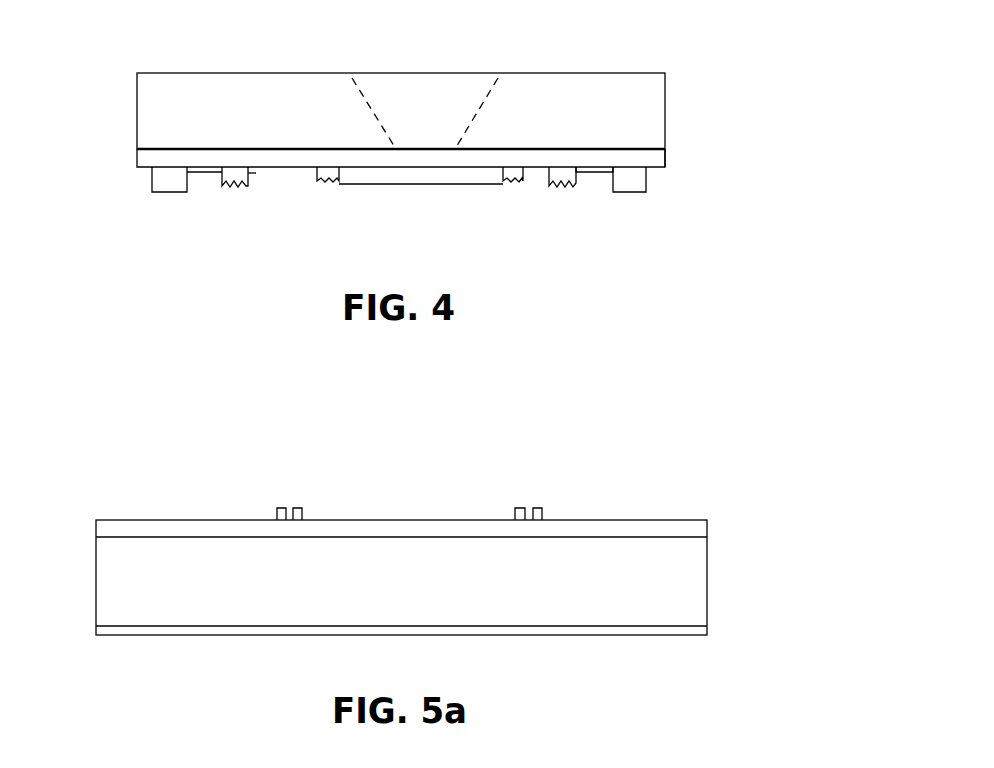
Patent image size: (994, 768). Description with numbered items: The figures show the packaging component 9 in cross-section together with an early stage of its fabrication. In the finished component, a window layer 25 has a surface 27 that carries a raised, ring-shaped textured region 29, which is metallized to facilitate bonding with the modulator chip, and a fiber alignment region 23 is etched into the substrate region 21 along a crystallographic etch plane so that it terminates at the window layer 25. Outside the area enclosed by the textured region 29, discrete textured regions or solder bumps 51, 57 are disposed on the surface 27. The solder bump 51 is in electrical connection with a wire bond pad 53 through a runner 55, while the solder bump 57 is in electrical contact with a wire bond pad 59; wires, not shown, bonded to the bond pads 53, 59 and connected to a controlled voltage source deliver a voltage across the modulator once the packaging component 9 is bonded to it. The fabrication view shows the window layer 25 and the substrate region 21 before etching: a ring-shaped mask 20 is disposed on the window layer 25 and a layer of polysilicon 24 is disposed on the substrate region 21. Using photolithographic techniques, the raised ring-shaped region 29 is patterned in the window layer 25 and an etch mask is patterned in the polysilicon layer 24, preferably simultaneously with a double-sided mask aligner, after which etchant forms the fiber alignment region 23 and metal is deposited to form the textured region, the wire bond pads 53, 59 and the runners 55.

In FIG. 4, the packaging component 9 is at (683, 106).
In FIG. 4, the fiber alignment region 23 is at (423, 84).
In FIG. 4, the polysilicon layer 24 is at (418, 174).
In FIG. 5a, the polysilicon layer 24 is at (98, 632).
In FIG. 4, the window layer 25 is at (142, 161).
In FIG. 5a, the window layer 25 is at (698, 527).
In FIG. 4, the surface 27 is at (653, 167).
In FIG. 4, the textured region 29 is at (330, 177).
In FIG. 4, the solder bump 51 is at (250, 174).
In FIG. 4, the wire bond pad 53 is at (163, 182).
In FIG. 4, the runner 55 is at (198, 173).
In FIG. 4, the solder bump 57 is at (562, 180).
In FIG. 4, the wire bond pad 59 is at (630, 183).
In FIG. 5a, the ring-shaped mask 20 is at (287, 493).
In FIG. 5a, the substrate region 21 is at (698, 576).